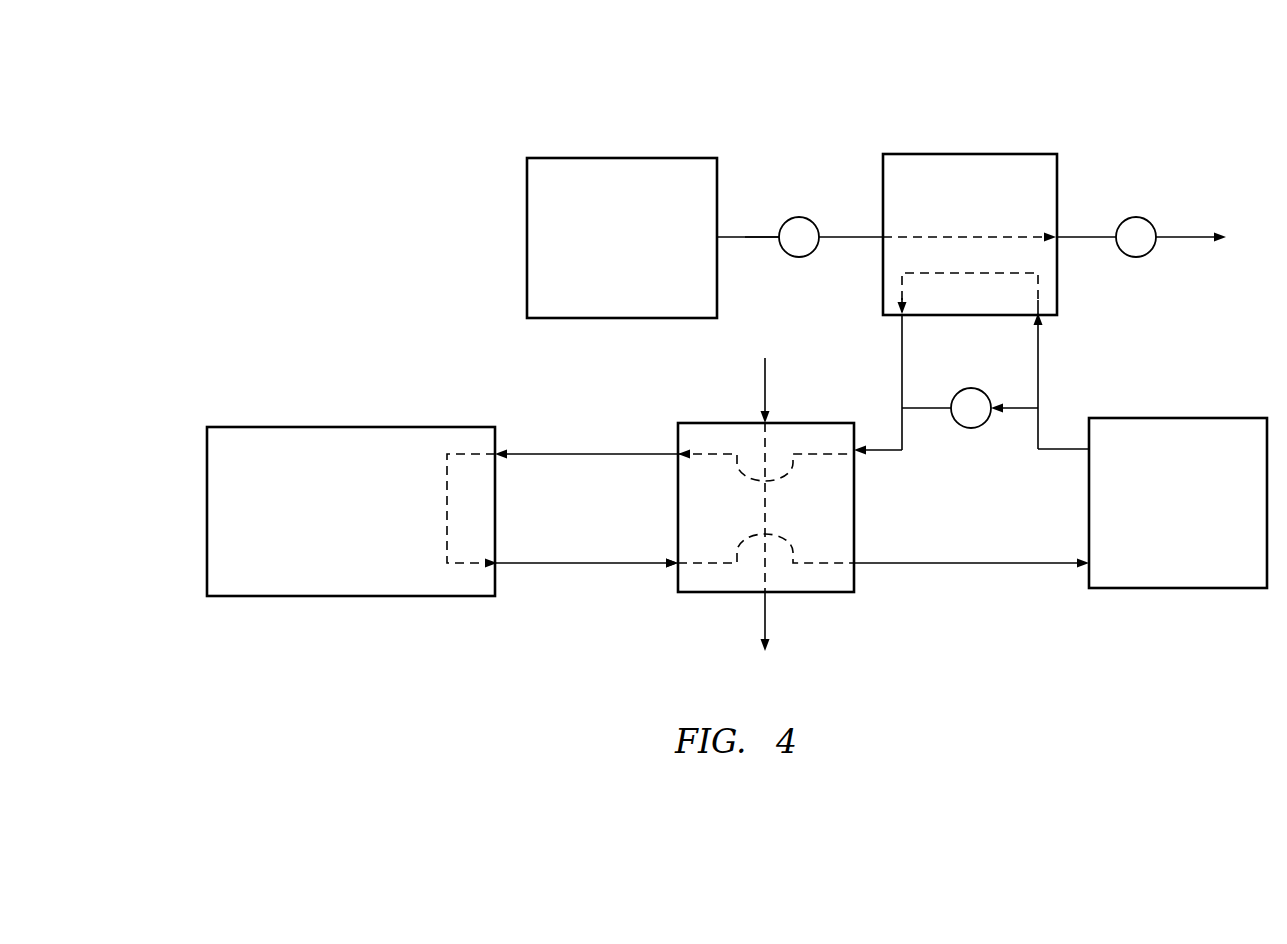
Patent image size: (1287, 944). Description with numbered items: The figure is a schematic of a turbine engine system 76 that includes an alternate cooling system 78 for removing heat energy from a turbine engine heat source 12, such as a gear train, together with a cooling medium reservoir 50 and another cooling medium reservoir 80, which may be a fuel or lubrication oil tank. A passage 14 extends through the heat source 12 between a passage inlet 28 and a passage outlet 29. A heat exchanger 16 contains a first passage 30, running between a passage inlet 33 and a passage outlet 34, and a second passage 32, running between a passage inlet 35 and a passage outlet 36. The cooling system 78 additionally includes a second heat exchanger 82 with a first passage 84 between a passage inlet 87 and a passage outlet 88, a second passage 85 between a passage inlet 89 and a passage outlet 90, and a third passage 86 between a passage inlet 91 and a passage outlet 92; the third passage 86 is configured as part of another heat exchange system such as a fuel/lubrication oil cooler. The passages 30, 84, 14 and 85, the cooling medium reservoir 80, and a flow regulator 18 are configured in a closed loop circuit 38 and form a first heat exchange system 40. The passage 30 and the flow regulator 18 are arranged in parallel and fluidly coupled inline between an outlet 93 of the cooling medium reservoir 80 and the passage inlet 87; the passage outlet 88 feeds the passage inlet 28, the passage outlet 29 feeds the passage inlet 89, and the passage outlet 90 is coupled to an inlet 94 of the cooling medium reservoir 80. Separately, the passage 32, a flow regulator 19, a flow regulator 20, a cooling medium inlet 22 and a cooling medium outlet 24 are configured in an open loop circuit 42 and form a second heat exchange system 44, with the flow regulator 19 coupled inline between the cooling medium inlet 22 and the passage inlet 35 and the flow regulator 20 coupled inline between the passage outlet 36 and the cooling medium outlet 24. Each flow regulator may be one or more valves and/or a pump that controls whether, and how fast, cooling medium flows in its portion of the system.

The turbine engine heat source 12 is at (318, 521).
The passage 14 is at (447, 508).
The heat exchanger 16 is at (916, 153).
The flow regulator 18 is at (971, 428).
The flow regulator 19 is at (806, 257).
The flow regulator 20 is at (1141, 257).
The cooling medium inlet 22 is at (738, 242).
The cooling medium outlet 24 is at (1184, 236).
The passage inlet 28 is at (497, 453).
The passage outlet 29 is at (500, 572).
The first passage 30 is at (961, 273).
The second passage 32 is at (948, 237).
The passage inlet 33 is at (1042, 320).
The passage outlet 34 is at (900, 318).
The passage inlet 35 is at (882, 236).
The passage outlet 36 is at (1058, 235).
The closed loop circuit 38 is at (605, 568).
The first heat exchange system 40 is at (578, 618).
The open loop circuit 42 is at (761, 234).
The second heat exchange system 44 is at (810, 156).
The cooling medium reservoir 50 is at (608, 251).
The turbine engine system 76 is at (268, 112).
The cooling system 78 is at (362, 265).
The cooling medium reservoir 80 is at (1164, 513).
The second heat exchanger 82 is at (838, 593).
The first passage 84 is at (716, 453).
The second passage 85 is at (700, 566).
The third passage 86 is at (765, 508).
The passage inlet 87 is at (852, 449).
The passage outlet 88 is at (677, 453).
The passage inlet 89 is at (677, 562).
The passage outlet 90 is at (868, 561).
The passage inlet 91 is at (763, 420).
The passage outlet 92 is at (768, 595).
The outlet 93 is at (1089, 455).
The inlet 94 is at (1088, 565).